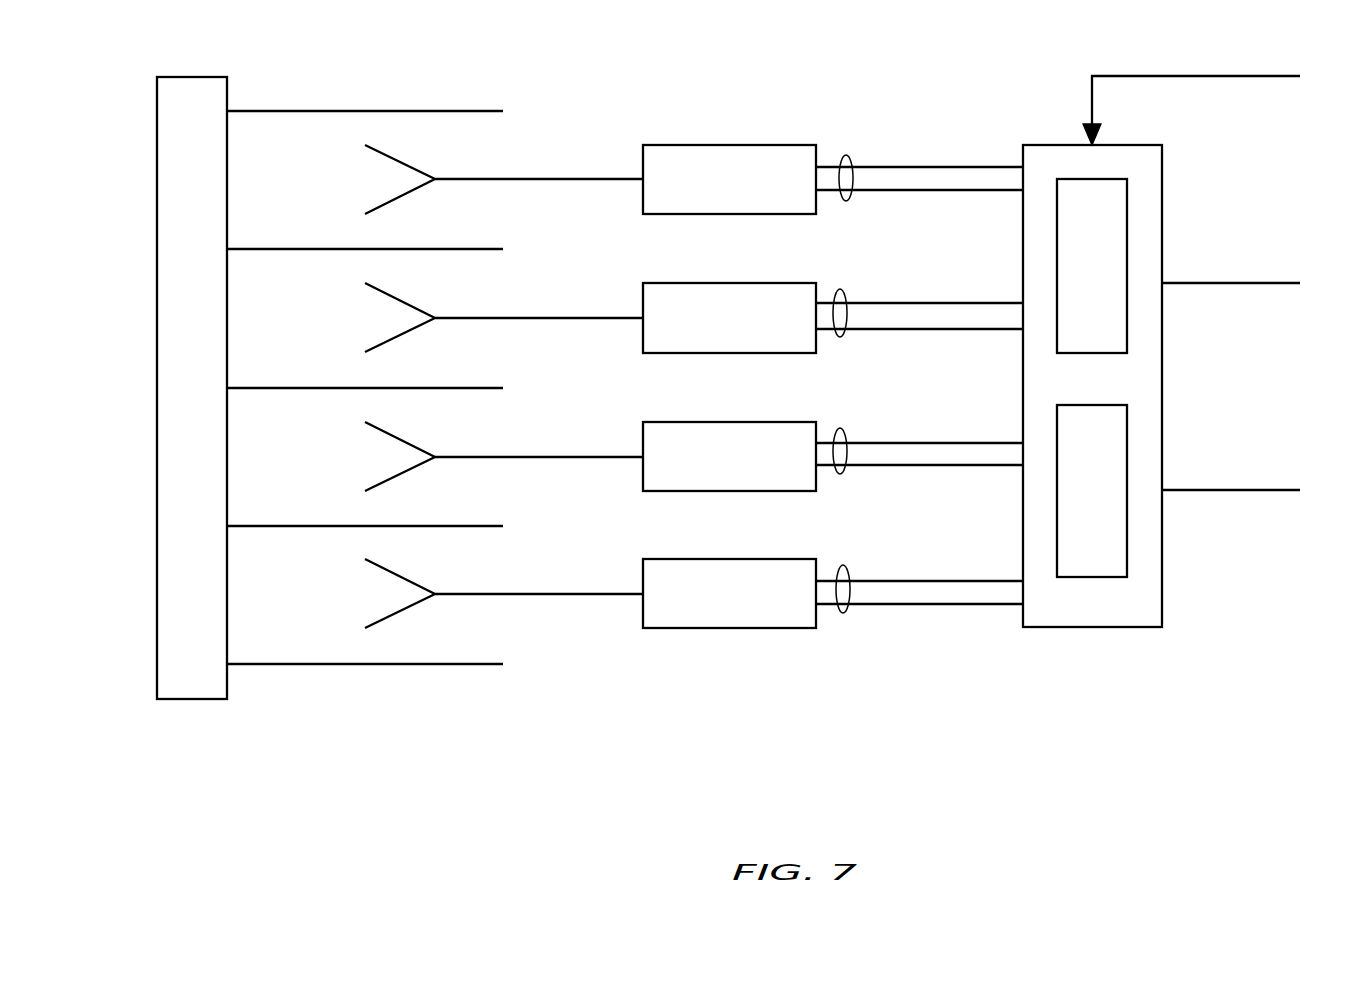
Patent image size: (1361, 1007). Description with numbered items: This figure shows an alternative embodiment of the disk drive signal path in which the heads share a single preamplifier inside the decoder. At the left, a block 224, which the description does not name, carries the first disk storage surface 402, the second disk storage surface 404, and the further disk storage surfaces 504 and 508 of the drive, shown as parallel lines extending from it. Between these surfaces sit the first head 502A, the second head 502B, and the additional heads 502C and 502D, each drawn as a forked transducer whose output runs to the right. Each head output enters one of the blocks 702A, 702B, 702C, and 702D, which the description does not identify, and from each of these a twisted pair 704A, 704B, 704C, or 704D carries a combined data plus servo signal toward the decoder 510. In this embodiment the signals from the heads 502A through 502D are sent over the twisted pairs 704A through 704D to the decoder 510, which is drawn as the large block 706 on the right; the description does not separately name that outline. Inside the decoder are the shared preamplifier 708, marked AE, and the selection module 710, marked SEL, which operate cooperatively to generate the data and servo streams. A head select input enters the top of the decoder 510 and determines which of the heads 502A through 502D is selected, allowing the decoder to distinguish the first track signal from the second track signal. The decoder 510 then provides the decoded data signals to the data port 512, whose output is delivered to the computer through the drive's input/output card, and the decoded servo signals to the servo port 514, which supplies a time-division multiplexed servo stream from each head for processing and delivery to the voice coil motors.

The head stack assembly 224 is at (227, 95).
The first disk storage surface 402 is at (465, 111).
The second disk storage surface 404 is at (465, 249).
The disk storage surface 504 is at (455, 388).
The disk storage surface 508 is at (445, 526).
The first transducer or head 502A is at (418, 170).
The second transducer or head 502B is at (418, 309).
The head 502C is at (418, 448).
The head 502D is at (418, 585).
The preamplifier A 702A is at (683, 145).
The preamplifier B 702B is at (683, 283).
The preamplifier C 702C is at (668, 422).
The preamplifier D 702D is at (683, 559).
The twisted pair 704A is at (846, 156).
The twisted pair 704B is at (842, 290).
The twisted pair 704C is at (843, 429).
The twisted pair 704D is at (843, 567).
The channel circuit block 706 is at (1162, 177).
The shared preamplifier 708 is at (1127, 243).
The selection module 710 is at (1127, 430).
The decoder 510 is at (1297, 77).
The data port 512 is at (1162, 283).
The servo port 514 is at (1162, 490).